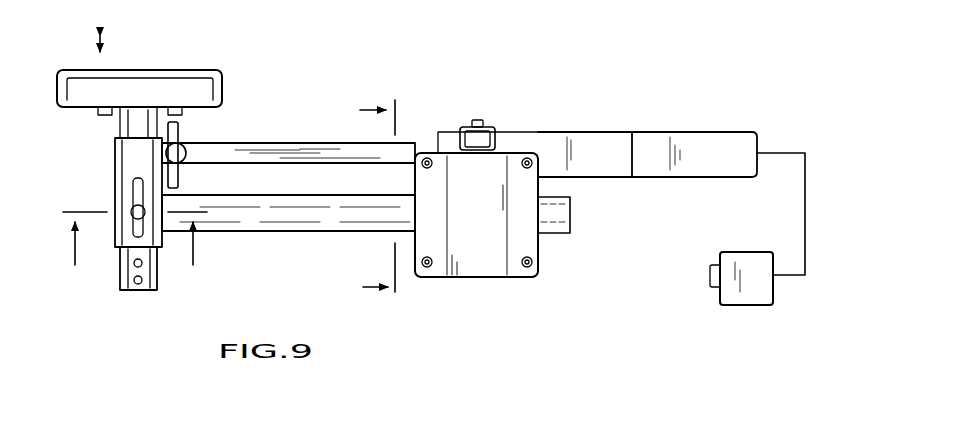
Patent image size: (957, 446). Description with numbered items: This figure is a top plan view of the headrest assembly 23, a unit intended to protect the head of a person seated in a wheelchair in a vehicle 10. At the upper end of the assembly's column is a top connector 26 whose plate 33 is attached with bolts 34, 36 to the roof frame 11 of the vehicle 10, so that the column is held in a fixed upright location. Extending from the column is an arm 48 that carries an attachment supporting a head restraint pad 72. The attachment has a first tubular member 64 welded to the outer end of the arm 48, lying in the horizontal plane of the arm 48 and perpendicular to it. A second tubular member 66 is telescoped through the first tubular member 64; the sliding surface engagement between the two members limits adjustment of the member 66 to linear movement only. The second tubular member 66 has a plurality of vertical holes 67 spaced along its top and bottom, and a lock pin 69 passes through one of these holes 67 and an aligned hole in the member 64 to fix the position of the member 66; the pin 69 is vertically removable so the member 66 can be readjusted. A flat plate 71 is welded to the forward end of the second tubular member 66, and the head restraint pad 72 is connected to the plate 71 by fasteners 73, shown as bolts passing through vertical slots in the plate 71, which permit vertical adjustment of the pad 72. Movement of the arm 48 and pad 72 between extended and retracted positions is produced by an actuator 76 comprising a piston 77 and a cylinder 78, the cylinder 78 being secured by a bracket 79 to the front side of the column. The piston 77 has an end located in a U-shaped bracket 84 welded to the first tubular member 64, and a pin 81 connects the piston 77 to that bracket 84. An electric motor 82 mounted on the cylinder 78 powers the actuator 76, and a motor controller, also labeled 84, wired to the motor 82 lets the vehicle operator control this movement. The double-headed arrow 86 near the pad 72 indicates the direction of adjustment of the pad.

The vehicle 10 is at (363, 199).
The roof frame 11 is at (135, 249).
The headrest assembly 23 is at (525, 56).
The top connector 26 is at (548, 247).
The plate 33 is at (470, 260).
The bolt 34 is at (527, 268).
The bolt 36 is at (423, 270).
The arm 48 is at (300, 215).
The first tubular member 64 is at (130, 162).
The second tubular member 66 is at (120, 275).
The vertical holes 67 is at (137, 284).
The lock pin 69 is at (131, 211).
The flat plate 71 is at (118, 110).
The head restraint pad 72 is at (167, 88).
The fasteners 73 is at (180, 113).
The actuator 76 is at (660, 185).
The piston 77 is at (410, 148).
The cylinder 78 is at (593, 148).
The bracket 79 is at (463, 127).
The pin 81 is at (177, 155).
The electric motor 82 is at (695, 147).
The U-shaped bracket 84 is at (183, 163).
The direction arrow 86 is at (96, 44).